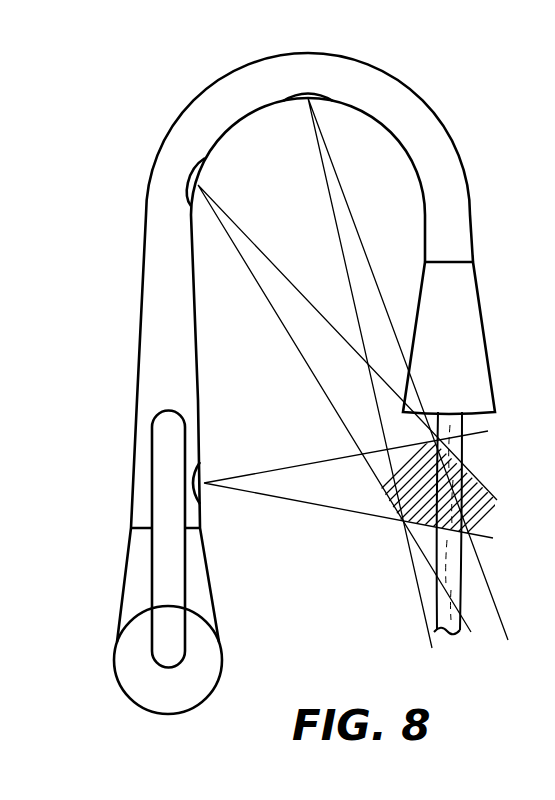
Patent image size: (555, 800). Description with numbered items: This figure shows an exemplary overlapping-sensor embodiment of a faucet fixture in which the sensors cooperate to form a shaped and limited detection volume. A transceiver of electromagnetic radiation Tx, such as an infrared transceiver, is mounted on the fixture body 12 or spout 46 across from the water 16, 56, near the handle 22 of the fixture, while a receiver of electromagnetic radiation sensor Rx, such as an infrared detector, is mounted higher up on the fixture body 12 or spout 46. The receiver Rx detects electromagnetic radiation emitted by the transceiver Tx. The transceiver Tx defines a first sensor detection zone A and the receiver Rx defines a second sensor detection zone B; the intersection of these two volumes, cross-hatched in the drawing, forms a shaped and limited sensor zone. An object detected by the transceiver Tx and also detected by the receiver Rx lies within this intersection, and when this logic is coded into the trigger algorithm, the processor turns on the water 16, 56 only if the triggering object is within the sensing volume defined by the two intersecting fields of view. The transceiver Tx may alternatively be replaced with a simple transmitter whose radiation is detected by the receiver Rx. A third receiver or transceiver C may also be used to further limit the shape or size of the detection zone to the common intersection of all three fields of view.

The fixture body 12 is at (205, 110).
The handle 22 is at (145, 497).
The spout 46 is at (442, 142).
The water 16 is at (438, 597).
The water 56 is at (448, 523).
The receiver of electromagnetic radiation sensor Rx is at (297, 96).
The transceiver of electromagnetic radiation Tx is at (196, 481).
The first sensor detection zone A is at (327, 507).
The second sensor detection zone B is at (268, 258).
The third receiver or transceiver C is at (352, 215).